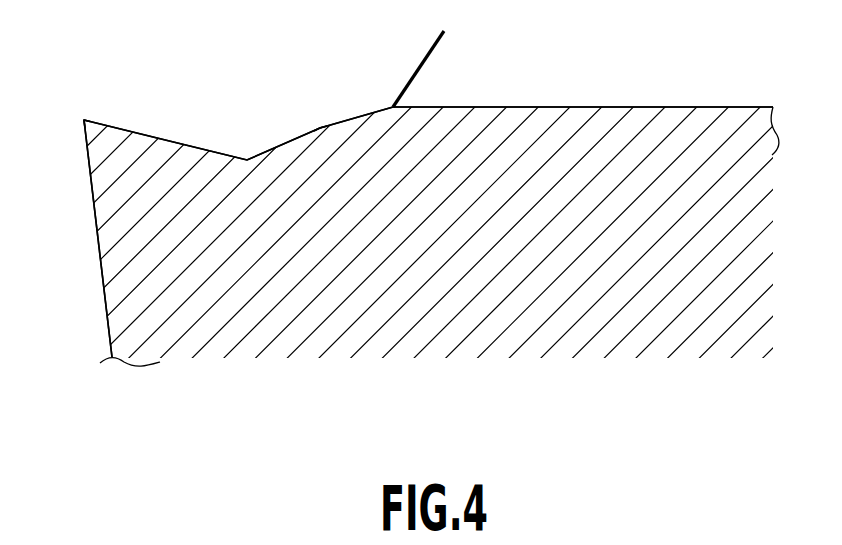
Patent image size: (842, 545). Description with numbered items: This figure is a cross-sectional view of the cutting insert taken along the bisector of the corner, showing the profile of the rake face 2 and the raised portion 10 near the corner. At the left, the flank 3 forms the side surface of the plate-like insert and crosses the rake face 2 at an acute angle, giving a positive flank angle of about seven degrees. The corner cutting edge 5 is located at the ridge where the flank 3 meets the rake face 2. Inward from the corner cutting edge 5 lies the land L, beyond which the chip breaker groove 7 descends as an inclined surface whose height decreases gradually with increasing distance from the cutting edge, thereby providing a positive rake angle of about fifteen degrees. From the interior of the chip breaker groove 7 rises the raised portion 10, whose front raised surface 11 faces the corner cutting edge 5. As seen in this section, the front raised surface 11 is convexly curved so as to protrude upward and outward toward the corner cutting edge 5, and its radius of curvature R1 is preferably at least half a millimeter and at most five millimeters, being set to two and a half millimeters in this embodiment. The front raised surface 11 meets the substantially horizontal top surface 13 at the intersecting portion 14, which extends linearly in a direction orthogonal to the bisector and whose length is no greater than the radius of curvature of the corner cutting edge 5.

The rake face 2 is at (273, 95).
The flank 3 is at (95, 210).
The corner cutting edge 5 is at (84, 120).
The chip breaker groove 7 is at (159, 126).
The land L is at (97, 120).
The raised portion 10 is at (528, 86).
The front raised surface 11 is at (353, 118).
The top surface 13 is at (610, 106).
The intersecting portion 14 is at (430, 54).
The radius of curvature R1 is at (323, 133).